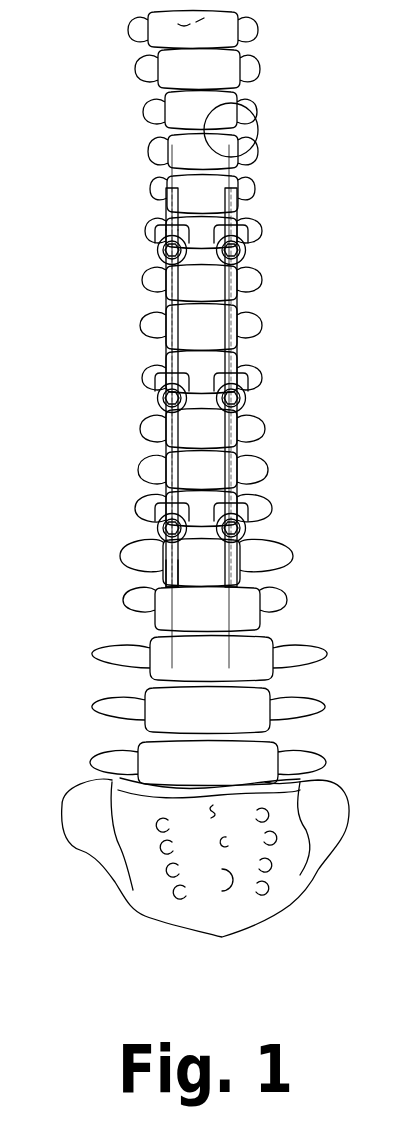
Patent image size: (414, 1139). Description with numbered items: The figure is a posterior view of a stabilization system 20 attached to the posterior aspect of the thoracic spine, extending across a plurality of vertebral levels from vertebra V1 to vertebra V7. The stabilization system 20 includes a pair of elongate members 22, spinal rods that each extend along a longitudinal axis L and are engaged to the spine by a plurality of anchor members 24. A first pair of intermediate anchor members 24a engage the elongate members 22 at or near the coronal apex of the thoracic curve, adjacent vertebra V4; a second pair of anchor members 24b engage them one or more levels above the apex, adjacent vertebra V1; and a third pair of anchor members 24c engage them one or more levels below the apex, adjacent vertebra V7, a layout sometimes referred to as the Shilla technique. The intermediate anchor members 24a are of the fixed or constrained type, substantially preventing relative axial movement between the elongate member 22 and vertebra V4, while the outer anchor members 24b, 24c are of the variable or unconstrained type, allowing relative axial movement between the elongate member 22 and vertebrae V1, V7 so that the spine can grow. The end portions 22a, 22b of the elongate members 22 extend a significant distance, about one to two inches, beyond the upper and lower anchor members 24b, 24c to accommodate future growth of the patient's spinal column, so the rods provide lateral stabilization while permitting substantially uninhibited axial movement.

The stabilization system 20 is at (211, 384).
The elongate member 22 is at (194, 384).
The end portion 22a is at (168, 200).
The end portion 22b is at (170, 589).
The anchor member 24 is at (213, 375).
The intermediate anchor member 24a is at (142, 388).
The upper anchor member 24b is at (146, 230).
The lower anchor member 24c is at (146, 523).
The vertebra V1 is at (205, 231).
The vertebra V4 is at (207, 372).
The vertebra V7 is at (207, 507).
The longitudinal axis L is at (172, 142).